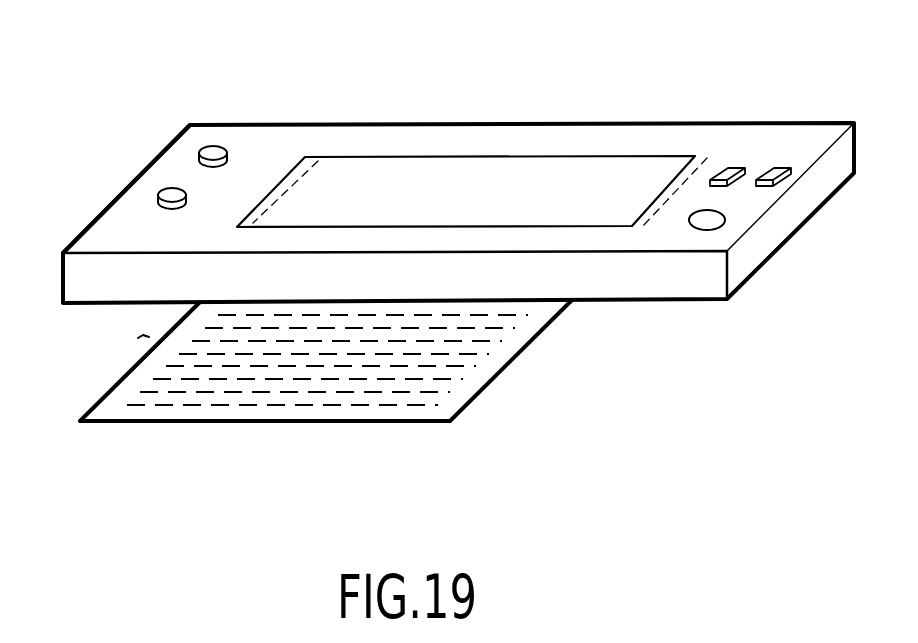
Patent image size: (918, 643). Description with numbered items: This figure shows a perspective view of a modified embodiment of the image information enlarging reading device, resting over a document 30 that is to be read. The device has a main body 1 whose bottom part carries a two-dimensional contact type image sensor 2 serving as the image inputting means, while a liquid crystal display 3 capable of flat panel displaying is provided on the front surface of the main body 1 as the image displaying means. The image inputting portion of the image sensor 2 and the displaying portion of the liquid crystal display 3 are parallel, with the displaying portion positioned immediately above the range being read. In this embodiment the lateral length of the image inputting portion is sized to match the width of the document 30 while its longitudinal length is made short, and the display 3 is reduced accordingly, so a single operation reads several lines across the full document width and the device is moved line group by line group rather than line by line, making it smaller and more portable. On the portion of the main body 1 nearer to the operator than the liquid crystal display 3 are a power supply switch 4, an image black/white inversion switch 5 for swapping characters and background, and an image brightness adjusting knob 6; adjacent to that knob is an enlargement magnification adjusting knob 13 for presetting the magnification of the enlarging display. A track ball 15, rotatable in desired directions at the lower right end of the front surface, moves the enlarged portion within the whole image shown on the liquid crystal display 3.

The main body 1 is at (813, 124).
The two-dimensional contact type image sensor 2 is at (302, 177).
The liquid crystal display 3 is at (463, 168).
The power supply switch 4 is at (784, 168).
The image black/white inversion switch 5 is at (736, 168).
The image brightness adjusting knob 6 is at (197, 157).
The enlargement magnification adjusting knob 13 is at (157, 203).
The track ball 15 is at (705, 230).
The document 30 is at (483, 387).